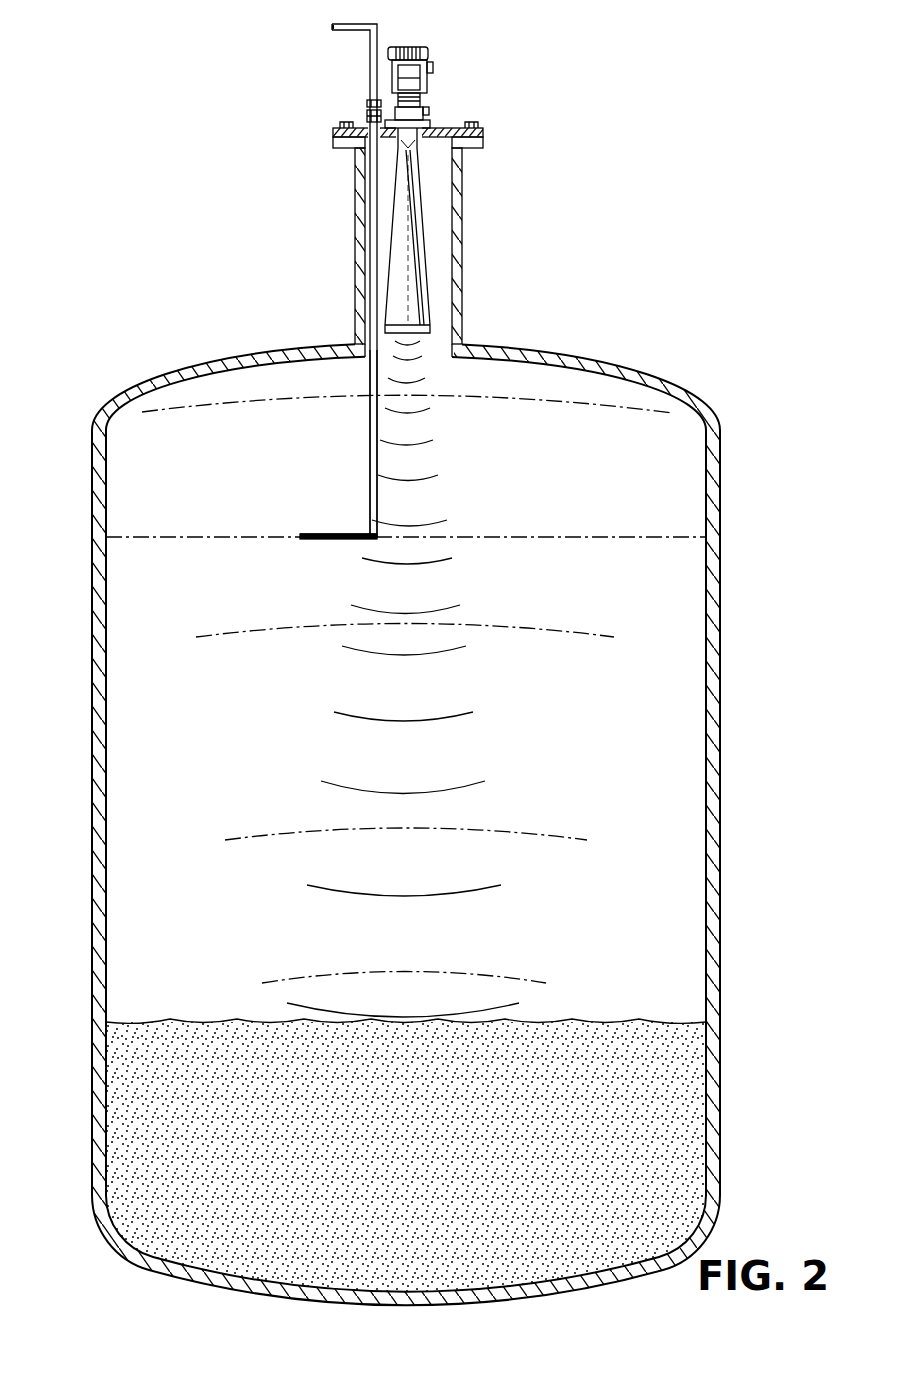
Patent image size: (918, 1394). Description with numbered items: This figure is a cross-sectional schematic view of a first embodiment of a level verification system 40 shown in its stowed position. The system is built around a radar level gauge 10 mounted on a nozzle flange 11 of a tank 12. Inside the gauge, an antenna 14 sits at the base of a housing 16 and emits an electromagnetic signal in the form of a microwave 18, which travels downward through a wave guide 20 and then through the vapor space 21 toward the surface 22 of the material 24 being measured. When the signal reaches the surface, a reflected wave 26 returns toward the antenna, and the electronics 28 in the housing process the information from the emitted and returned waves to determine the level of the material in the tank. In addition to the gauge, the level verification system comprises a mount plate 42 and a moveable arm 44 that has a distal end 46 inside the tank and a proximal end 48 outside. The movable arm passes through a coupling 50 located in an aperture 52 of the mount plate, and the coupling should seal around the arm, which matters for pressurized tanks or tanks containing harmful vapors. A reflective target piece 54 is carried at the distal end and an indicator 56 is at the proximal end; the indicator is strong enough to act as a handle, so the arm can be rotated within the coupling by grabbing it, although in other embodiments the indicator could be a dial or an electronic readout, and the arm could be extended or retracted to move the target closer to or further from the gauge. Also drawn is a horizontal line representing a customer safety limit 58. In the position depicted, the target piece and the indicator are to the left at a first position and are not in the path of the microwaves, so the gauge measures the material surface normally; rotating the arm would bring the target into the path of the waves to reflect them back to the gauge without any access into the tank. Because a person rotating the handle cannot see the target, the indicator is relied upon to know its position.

The radar level gauge 10 is at (436, 68).
The nozzle flange 11 is at (463, 232).
The tank 12 is at (664, 373).
The antenna 14 is at (420, 150).
The housing 16 is at (410, 48).
The microwave 18 is at (325, 889).
The wave guide 20 is at (416, 280).
The vapor space 21 is at (614, 584).
The surface 22 is at (605, 1021).
The material 24 is at (406, 1157).
The reflected wave 26 is at (268, 630).
The electronics 28 is at (422, 73).
The level verification system 40 is at (226, 110).
The mount plate 42 is at (484, 130).
The moveable arm 44 is at (372, 457).
The distal end 46 is at (375, 540).
The proximal end 48 is at (378, 26).
The coupling 50 is at (368, 103).
The aperture 52 is at (367, 120).
The reflective target piece 54 is at (325, 533).
The indicator 56 is at (332, 27).
The customer safety limit 58 is at (586, 534).